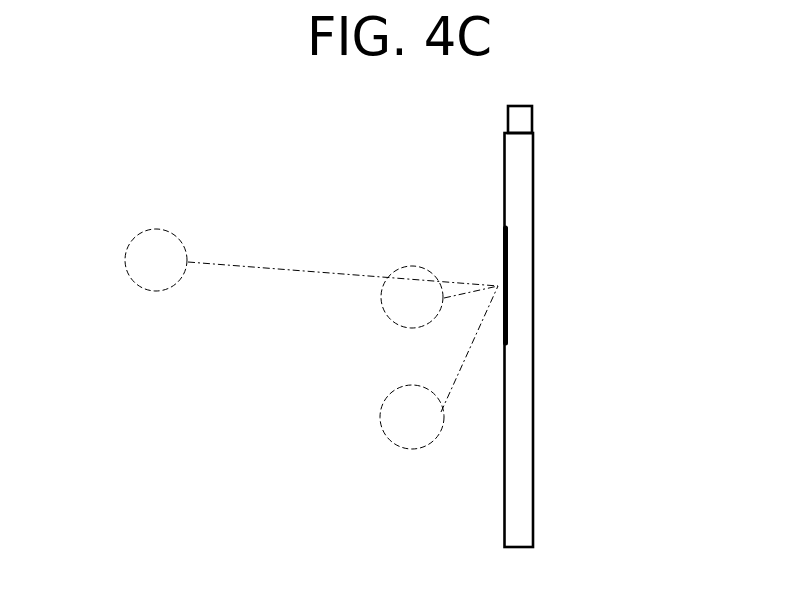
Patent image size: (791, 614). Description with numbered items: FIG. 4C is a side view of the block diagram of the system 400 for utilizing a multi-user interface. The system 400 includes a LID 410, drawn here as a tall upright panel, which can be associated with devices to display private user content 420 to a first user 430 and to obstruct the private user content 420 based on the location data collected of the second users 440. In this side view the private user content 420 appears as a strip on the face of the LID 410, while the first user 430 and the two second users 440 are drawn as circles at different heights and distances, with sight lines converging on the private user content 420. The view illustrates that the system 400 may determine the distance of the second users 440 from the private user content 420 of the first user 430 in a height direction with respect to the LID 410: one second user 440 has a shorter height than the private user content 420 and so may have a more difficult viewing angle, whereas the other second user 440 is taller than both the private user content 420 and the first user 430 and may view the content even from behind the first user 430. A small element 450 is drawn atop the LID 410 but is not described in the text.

The system 400 is at (578, 134).
The LID 410 is at (533, 352).
The private user content 420 is at (502, 252).
The first user 430 is at (392, 272).
The second user 440 is at (125, 262).
The device top cap 450 is at (532, 108).